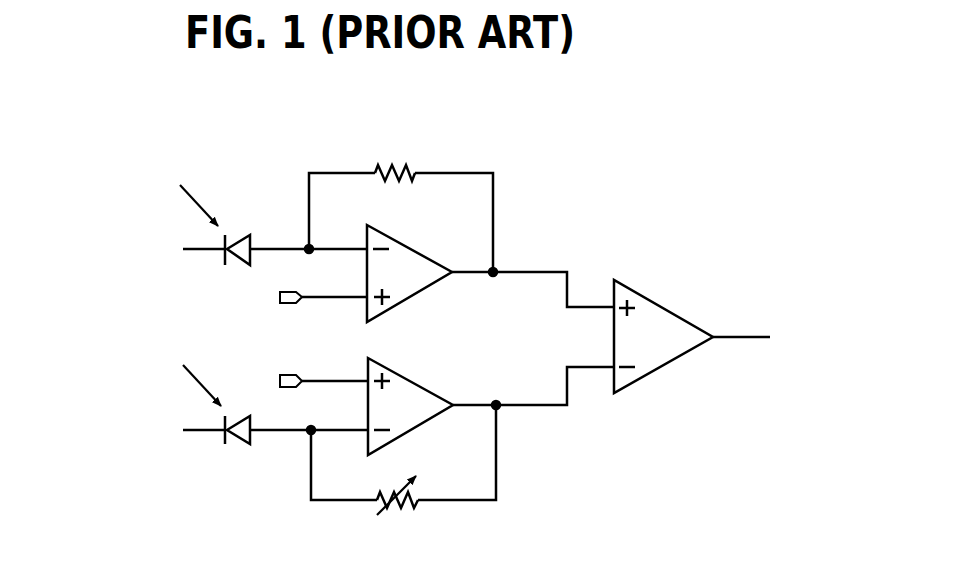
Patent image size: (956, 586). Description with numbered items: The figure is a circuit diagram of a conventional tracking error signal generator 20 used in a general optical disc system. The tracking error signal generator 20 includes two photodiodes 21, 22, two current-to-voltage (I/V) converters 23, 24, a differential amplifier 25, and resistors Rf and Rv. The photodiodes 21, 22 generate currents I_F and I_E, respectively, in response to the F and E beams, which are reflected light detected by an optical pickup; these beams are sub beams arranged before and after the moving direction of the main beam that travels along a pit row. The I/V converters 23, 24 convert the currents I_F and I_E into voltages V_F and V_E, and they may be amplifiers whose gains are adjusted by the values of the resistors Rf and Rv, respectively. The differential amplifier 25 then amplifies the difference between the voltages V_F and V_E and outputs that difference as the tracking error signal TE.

The tracking error signal generator 20 is at (577, 185).
The photodiode 21 is at (238, 234).
The photodiode 22 is at (240, 445).
The current-to-voltage (I/V) converter 23 is at (413, 243).
The current-to-voltage (I/V) converter 24 is at (415, 378).
The differential amplifier 25 is at (668, 282).